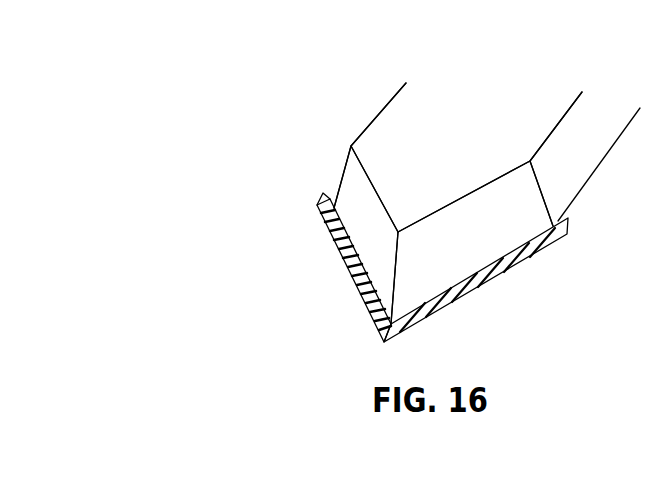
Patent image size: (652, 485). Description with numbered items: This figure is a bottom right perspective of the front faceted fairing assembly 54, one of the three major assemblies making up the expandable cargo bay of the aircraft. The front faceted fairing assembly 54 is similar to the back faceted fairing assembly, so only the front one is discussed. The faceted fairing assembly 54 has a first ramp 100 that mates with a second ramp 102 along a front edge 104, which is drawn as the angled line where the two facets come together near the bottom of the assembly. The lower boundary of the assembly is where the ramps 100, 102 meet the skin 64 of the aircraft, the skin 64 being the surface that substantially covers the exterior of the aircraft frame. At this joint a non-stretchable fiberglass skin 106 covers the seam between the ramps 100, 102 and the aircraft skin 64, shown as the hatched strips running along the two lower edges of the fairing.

The front faceted fairing assembly 54 is at (457, 50).
The skin 64 is at (320, 314).
The first ramp 100 is at (363, 198).
The second ramp 102 is at (462, 223).
The front edge 104 is at (395, 291).
The non-stretchable fiberglass skin 106 is at (315, 206).